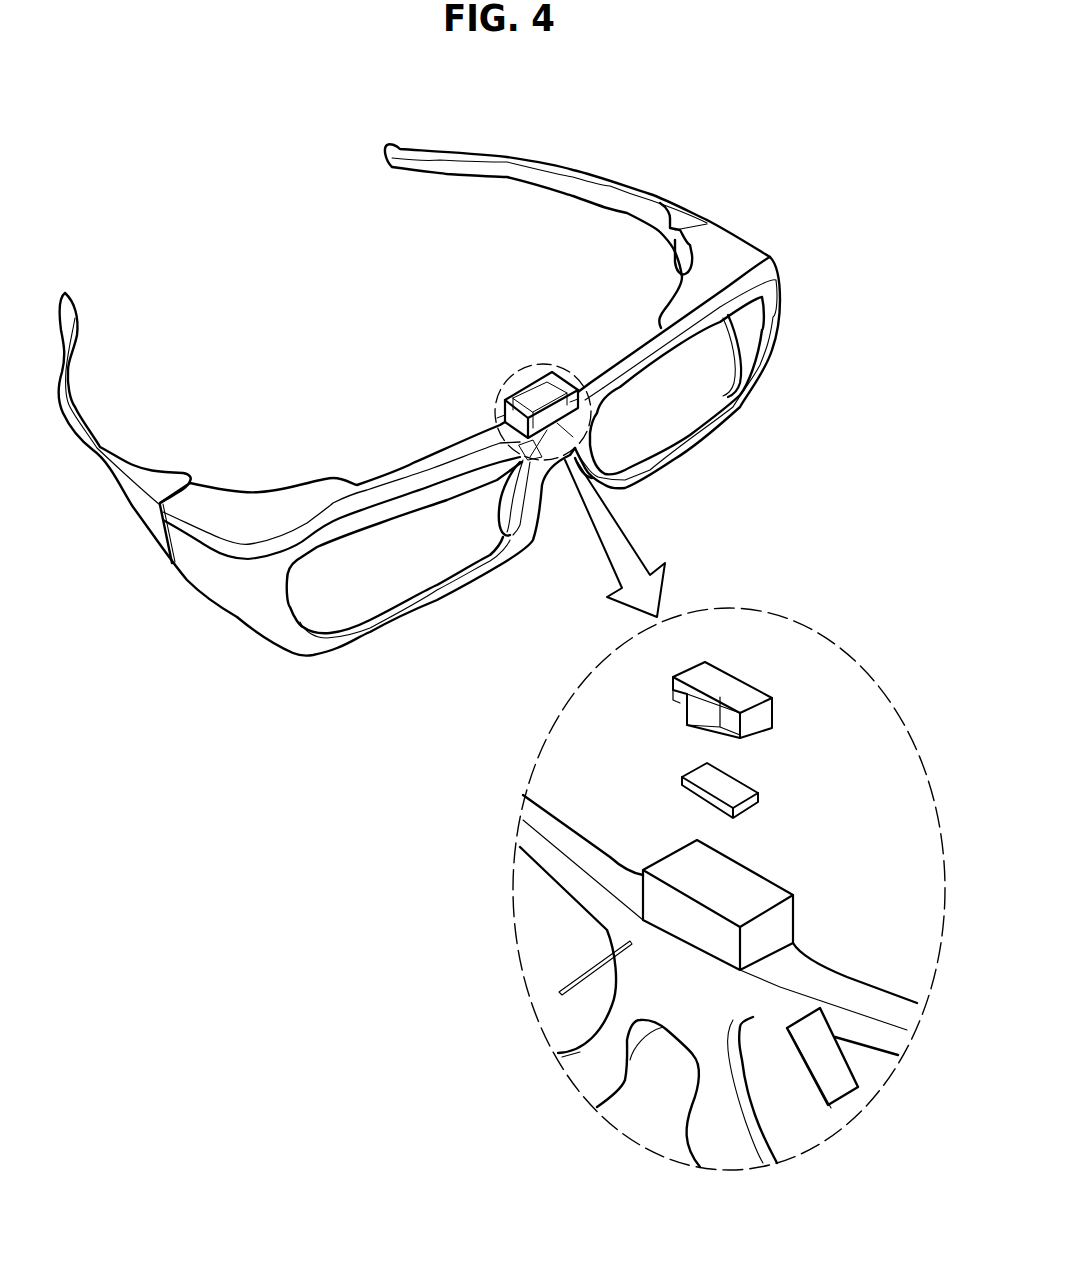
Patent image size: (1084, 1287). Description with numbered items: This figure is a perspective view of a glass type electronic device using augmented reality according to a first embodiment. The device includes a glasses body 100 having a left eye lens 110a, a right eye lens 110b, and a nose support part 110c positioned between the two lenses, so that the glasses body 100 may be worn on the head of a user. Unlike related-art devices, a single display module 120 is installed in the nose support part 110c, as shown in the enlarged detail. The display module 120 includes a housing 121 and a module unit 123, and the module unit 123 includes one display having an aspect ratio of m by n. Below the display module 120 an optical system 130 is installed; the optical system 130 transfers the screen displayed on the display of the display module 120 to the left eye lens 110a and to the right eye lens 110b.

The glasses body 100 is at (431, 382).
The left eye lens 110a is at (693, 410).
The right eye lens 110b is at (405, 582).
The nose support part 110c is at (513, 370).
The display module 120 is at (789, 744).
The housing 121 is at (767, 710).
The module unit 123 is at (765, 795).
The optical system 130 is at (787, 921).